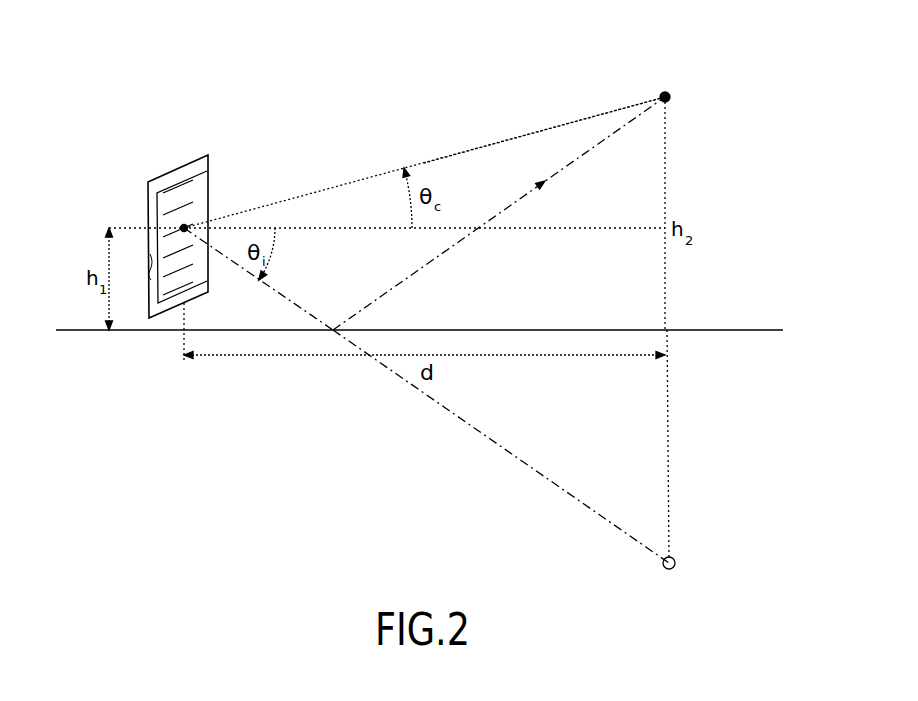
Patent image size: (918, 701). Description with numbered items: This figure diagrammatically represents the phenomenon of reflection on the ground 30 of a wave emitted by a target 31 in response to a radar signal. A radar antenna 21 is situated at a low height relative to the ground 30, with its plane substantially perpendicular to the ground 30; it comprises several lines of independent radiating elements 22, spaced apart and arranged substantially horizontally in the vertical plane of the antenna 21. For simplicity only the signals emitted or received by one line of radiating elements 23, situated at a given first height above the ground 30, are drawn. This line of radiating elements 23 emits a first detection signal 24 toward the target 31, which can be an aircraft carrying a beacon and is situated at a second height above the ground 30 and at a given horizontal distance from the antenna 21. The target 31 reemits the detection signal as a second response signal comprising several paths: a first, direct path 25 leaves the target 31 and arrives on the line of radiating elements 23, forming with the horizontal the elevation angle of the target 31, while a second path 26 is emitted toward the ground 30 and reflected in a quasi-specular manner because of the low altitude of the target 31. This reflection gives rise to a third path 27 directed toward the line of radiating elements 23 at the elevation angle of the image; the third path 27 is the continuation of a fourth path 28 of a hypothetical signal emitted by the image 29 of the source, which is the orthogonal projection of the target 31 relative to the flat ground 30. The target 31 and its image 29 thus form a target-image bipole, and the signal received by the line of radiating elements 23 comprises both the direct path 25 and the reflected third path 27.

The radar antenna 21 is at (210, 156).
The lines of radiating elements 22 is at (149, 270).
The line of radiating elements 23 is at (188, 226).
The first detection signal 24 is at (366, 178).
The first path (direct path) 25 is at (486, 145).
The second path 26 is at (514, 203).
The third path 27 is at (272, 290).
The fourth path 28 is at (498, 446).
The image of the target 29 is at (676, 558).
The ground 30 is at (757, 331).
The target 31 is at (668, 95).